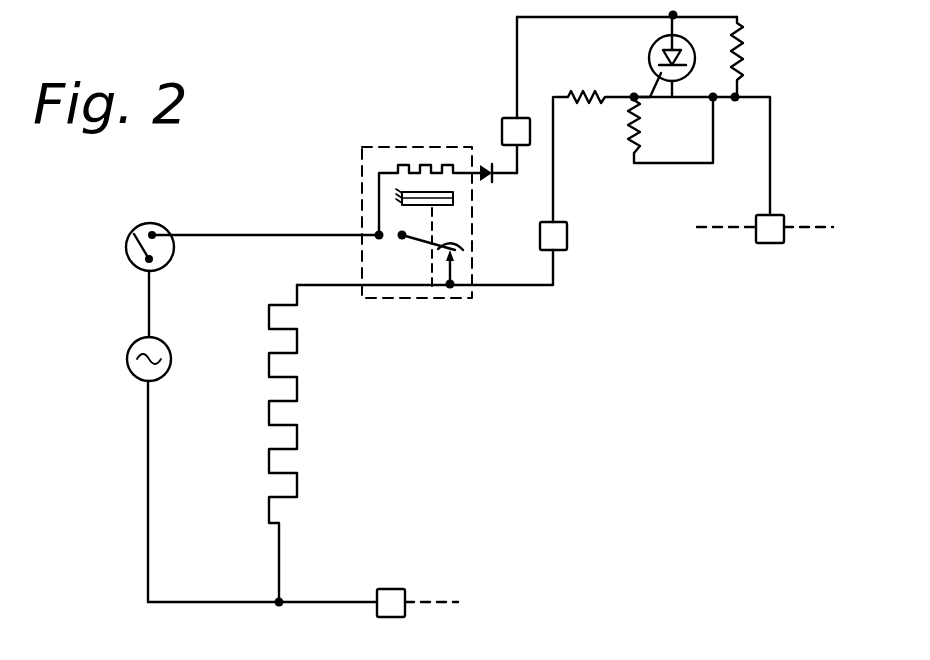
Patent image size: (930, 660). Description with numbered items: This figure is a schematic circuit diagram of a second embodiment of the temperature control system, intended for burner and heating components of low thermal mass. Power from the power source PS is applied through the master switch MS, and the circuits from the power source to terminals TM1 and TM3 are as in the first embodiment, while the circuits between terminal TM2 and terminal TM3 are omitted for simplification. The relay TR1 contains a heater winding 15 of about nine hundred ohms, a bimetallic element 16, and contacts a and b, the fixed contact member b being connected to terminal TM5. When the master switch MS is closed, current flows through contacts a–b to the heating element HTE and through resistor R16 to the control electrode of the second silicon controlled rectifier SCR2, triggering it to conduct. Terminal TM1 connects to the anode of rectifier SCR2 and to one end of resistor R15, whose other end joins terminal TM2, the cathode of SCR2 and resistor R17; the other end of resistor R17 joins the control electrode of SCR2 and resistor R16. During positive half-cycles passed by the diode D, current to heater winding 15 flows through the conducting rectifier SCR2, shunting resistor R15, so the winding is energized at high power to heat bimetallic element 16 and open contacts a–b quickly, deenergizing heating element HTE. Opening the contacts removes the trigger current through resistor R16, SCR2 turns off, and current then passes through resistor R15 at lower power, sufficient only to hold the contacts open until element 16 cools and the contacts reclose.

The master switch MS is at (149, 223).
The power source PS is at (172, 359).
The heating element HTE is at (297, 437).
The terminal TM3 is at (393, 589).
The relay TR1 is at (414, 201).
The heater winding 15 is at (427, 163).
The bimetallic element 16 is at (442, 205).
The contact member a is at (463, 250).
The fixed contact member b is at (447, 270).
The diode D is at (483, 182).
The terminal TM1 is at (508, 118).
The terminal TM5 is at (567, 237).
The terminal TM2 is at (767, 215).
The second silicon controlled rectifier SCR2 is at (650, 50).
The resistor R15 is at (737, 50).
The resistor R16 is at (593, 90).
The resistor R17 is at (627, 133).